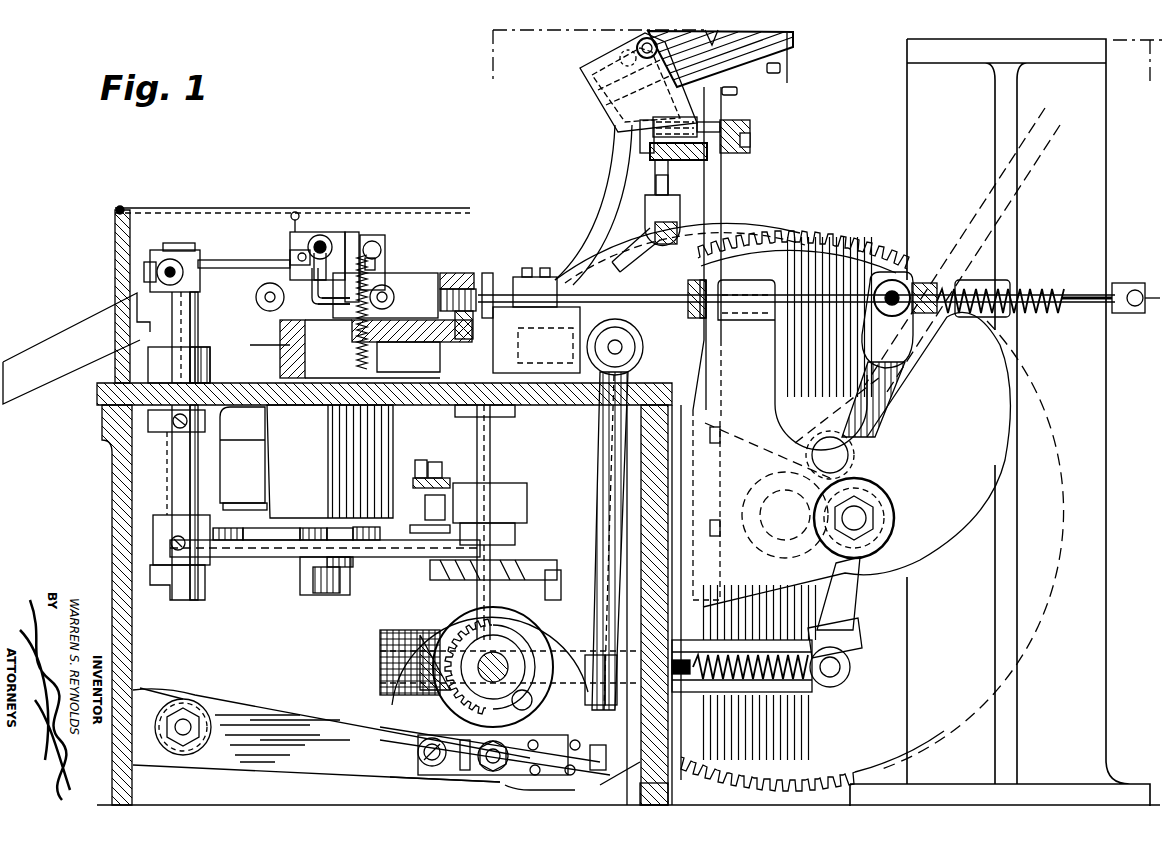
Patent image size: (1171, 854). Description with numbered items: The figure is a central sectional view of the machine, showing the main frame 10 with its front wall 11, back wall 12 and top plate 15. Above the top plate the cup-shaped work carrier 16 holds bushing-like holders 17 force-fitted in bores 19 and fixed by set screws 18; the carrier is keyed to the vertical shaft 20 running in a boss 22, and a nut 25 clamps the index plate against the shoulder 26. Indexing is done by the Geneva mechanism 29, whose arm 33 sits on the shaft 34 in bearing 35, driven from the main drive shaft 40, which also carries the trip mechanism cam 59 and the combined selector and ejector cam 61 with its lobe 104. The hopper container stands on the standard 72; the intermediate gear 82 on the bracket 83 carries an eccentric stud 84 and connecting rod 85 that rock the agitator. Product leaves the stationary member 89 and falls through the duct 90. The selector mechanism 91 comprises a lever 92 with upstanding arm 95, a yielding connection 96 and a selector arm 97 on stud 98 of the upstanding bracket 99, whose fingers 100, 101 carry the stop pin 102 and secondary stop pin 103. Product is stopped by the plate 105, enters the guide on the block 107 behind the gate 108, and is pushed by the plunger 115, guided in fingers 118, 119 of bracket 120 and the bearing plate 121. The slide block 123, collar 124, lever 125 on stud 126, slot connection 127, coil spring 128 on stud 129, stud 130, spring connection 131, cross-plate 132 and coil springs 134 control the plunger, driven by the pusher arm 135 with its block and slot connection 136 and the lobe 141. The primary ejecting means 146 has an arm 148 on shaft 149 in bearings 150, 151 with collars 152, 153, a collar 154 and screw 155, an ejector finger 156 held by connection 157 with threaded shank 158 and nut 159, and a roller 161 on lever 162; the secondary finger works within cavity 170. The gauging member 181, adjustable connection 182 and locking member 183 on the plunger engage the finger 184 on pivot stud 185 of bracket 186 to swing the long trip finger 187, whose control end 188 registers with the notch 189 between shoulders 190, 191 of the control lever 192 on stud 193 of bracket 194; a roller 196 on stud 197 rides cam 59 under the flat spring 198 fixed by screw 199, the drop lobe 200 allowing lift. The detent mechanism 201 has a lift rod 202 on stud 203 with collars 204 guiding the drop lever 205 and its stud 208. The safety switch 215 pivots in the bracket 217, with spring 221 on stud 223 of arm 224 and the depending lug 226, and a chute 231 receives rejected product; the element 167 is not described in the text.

The main frame 10 is at (110, 582).
The front wall 11 is at (112, 458).
The back wall 12 is at (692, 545).
The top plate 15 is at (105, 393).
The work carrier 16 is at (248, 346).
The holders 17 is at (256, 296).
The set screws 18 is at (464, 338).
The bores 19 is at (458, 273).
The vertical shaft 20 is at (286, 354).
The boss 22 is at (306, 461).
The nut 25 is at (314, 582).
The shoulder 26 is at (318, 528).
The Geneva mechanism 29 is at (530, 500).
The arm 33 is at (516, 536).
The vertically supported shaft 34 is at (495, 447).
The bearing 35 is at (458, 416).
The main drive shaft 40 is at (496, 650).
The trip mechanism cam 59 is at (530, 706).
The combined selector and ejector cam 61 is at (382, 716).
The standard 72 is at (1088, 137).
The intermediate gear 82 is at (822, 236).
The rearwardly extending bracket 83 is at (758, 442).
The eccentrically located stud 84 is at (842, 457).
The connecting rod 85 is at (1030, 155).
The stationary member 89 is at (594, 52).
The duct 90 is at (608, 174).
The selector mechanism 91 is at (690, 216).
The lever 92 is at (637, 580).
The upstanding arm 95 is at (632, 252).
The yielding connection 96 is at (678, 230).
The selector arm 97 is at (680, 162).
The stud 98 is at (640, 145).
The upstanding bracket 99 is at (722, 172).
The finger 100 is at (612, 108).
The finger 101 is at (722, 115).
The stop pin 102 is at (588, 78).
The secondary stop pin 103 is at (637, 45).
The lobe 104 is at (556, 585).
The plate 105 is at (522, 268).
The block 107 is at (512, 350).
The gate 108 is at (487, 273).
The plunger 115 is at (606, 280).
The finger 118 is at (758, 282).
The finger 119 is at (985, 282).
The bracket 120 is at (936, 548).
The bearing plate 121 is at (580, 276).
The slide block 123 is at (890, 278).
The collar 124 is at (926, 283).
The lever 125 is at (850, 604).
The pivot stud 126 is at (870, 515).
The slot connection 127 is at (870, 340).
The coil spring 128 is at (804, 692).
The stud 129 is at (690, 700).
The stud 130 is at (846, 676).
The spring connection 131 is at (1046, 288).
The cross-plate 132 is at (1136, 285).
The coil springs 134 is at (1078, 305).
The pusher arm 135 is at (760, 722).
The block and slot connection 136 is at (380, 675).
The lobe 141 is at (395, 640).
The primary ejecting means 146 is at (181, 245).
The arm 148 is at (205, 262).
The shaft 149 is at (170, 478).
The bearing 150 is at (160, 361).
The bearing 151 is at (200, 600).
The collar 152 is at (160, 546).
The collar 153 is at (152, 425).
The collar 154 is at (162, 282).
The screw 155 is at (168, 258).
The ejector finger 156 is at (335, 306).
The screw and nut connection 157 is at (327, 240).
The threaded shank 158 is at (312, 283).
The nut 159 is at (320, 235).
The roller 161 is at (532, 565).
The lever 162 is at (272, 552).
The lever 167 is at (380, 775).
The cavity 170 is at (410, 292).
The gauging member 181 is at (700, 308).
The adjustable connection 182 is at (690, 292).
The secondary locking member 183 is at (705, 330).
The upwardly projecting finger 184 is at (572, 330).
The pivot stud 185 is at (622, 347).
The bracket 186 is at (638, 338).
The long trip finger 187 is at (600, 470).
The control end 188 is at (590, 690).
The notch 189 is at (620, 775).
The shoulder 190 is at (605, 757).
The shoulder 191 is at (610, 690).
The control lever 192 is at (262, 752).
The stud 193 is at (186, 745).
The bracket 194 is at (152, 700).
The roller 196 is at (504, 775).
The stud 197 is at (488, 768).
The flat spring 198 is at (552, 780).
The screw 199 is at (668, 795).
The drop lobe 200 is at (462, 755).
The detent mechanism 201 is at (414, 468).
The lift rod 202 is at (422, 535).
The stud 203 is at (430, 766).
The collars 204 is at (440, 472).
The drop lever 205 is at (418, 490).
The stud 208 is at (436, 522).
The safety switch 215 is at (286, 256).
The bracket 217 is at (352, 232).
The spring 221 is at (375, 282).
The stud 223 is at (378, 262).
The arm 224 is at (378, 240).
The depending lug 226 is at (292, 226).
The chute 231 is at (30, 352).